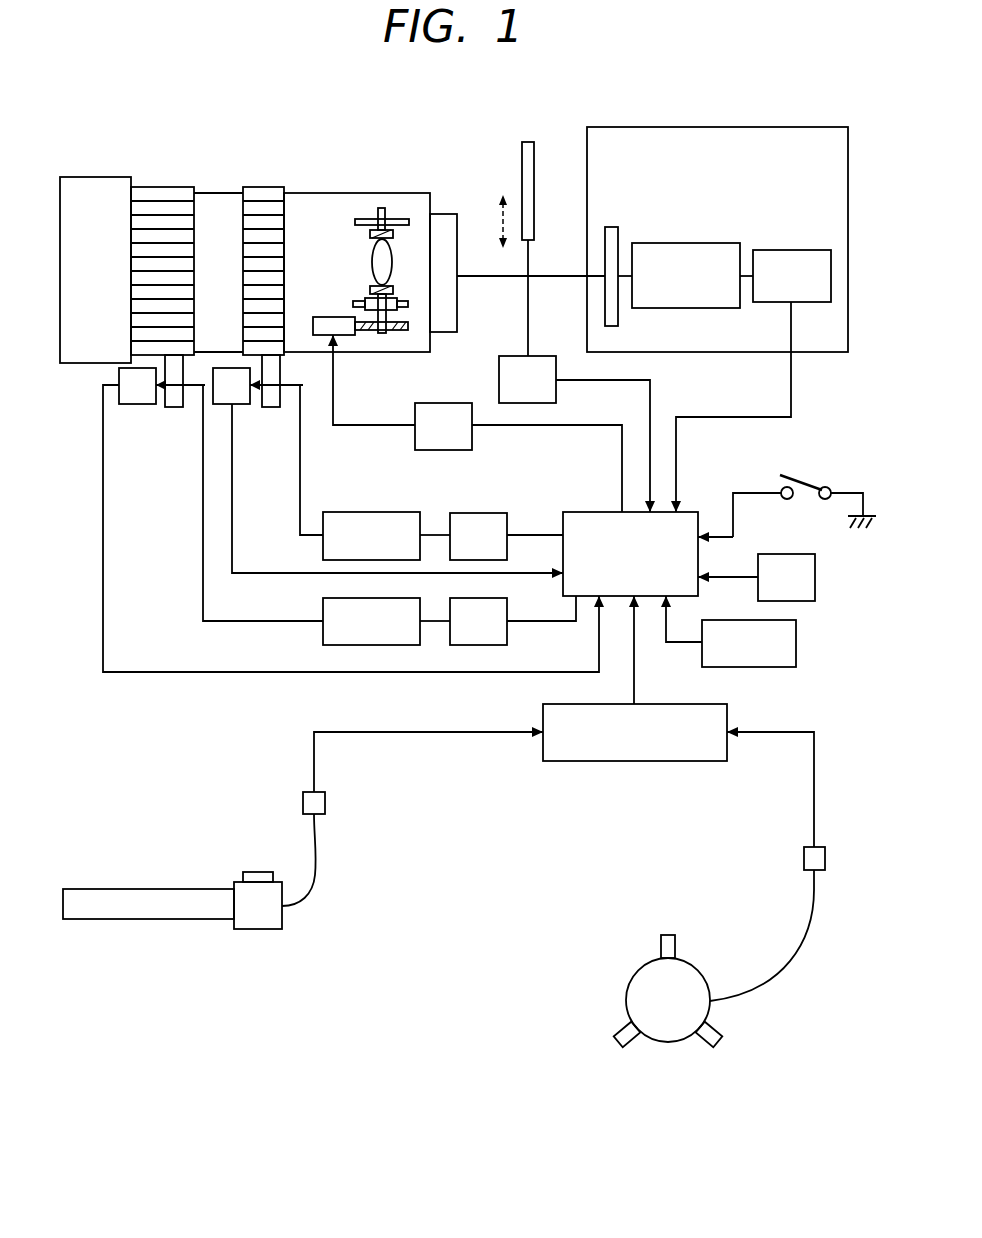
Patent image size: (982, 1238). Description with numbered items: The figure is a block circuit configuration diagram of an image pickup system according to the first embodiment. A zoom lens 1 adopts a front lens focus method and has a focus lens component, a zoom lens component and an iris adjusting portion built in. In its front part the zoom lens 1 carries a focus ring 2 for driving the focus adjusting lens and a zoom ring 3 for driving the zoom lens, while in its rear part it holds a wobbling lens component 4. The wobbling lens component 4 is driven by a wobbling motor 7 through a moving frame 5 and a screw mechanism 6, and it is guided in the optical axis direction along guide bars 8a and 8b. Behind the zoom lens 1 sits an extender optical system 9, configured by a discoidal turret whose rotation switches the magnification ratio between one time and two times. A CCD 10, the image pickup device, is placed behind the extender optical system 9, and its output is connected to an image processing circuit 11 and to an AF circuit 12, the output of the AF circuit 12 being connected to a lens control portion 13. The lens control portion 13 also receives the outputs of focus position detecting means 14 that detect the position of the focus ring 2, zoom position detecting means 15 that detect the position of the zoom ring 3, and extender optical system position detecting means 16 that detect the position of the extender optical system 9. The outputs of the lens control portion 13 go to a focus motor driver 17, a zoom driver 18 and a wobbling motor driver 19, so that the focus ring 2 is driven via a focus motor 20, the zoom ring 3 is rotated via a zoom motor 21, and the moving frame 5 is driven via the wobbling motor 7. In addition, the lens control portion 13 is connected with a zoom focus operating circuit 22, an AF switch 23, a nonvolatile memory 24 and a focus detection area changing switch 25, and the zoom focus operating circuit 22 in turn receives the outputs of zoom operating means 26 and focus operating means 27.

The zoom lens 1 is at (301, 192).
The focus ring 2 is at (158, 222).
The zoom ring 3 is at (262, 215).
The wobbling lens component 4 is at (376, 264).
The moving frame 5 is at (381, 336).
The screw mechanism 6 is at (403, 331).
The wobbling motor 7 is at (333, 323).
The guide bar 8a is at (398, 218).
The guide bar 8b is at (408, 304).
The extender optical system 9 is at (528, 150).
The CCD 10 is at (612, 232).
The image processing circuit 11 is at (686, 251).
The AF circuit 12 is at (794, 258).
The lens control portion 13 is at (583, 520).
The focus position detecting means 14 is at (137, 395).
The zoom position detecting means 15 is at (240, 398).
The extender optical system position detecting means 16 is at (544, 362).
The focus motor driver 17 is at (478, 637).
The zoom driver 18 is at (493, 522).
The wobbling motor driver 19 is at (438, 440).
The focus motor 20 is at (373, 637).
The zoom motor 21 is at (363, 521).
The zoom focus operating circuit 22 is at (637, 750).
The AF switch 23 is at (805, 478).
The nonvolatile memory 24 is at (790, 645).
The focus detection area changing switch 25 is at (808, 580).
The zoom operating means 26 is at (148, 912).
The focus operating means 27 is at (668, 1030).